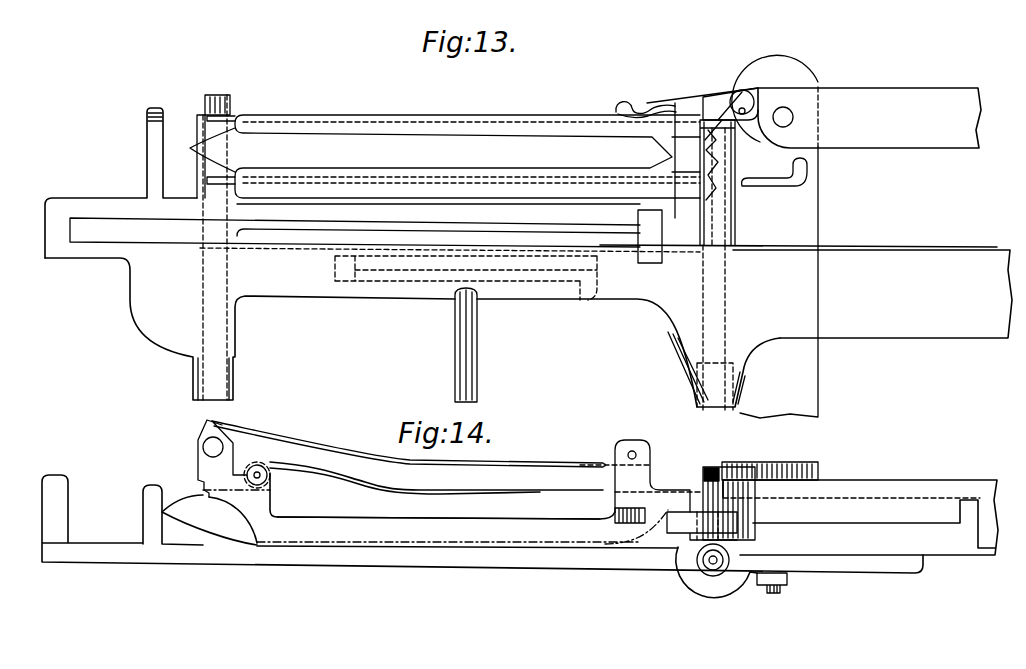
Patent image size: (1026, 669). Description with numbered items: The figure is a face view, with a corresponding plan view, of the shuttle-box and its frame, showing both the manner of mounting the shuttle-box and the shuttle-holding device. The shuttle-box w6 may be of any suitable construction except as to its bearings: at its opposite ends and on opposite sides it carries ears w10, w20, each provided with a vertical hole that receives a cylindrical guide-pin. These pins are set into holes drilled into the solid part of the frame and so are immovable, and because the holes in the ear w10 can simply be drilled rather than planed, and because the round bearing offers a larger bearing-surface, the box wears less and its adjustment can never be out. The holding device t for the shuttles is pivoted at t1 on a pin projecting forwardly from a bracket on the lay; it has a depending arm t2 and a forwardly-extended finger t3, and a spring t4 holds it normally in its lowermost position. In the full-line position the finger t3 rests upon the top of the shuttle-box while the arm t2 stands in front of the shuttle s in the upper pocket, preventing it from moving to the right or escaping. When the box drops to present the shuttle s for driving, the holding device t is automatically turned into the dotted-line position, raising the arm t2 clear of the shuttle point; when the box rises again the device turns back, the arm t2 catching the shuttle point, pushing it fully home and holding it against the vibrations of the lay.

In FIG. 13, the shuttle s is at (445, 156).
In FIG. 13, the ear w20 is at (733, 127).
In FIG. 14, the ear w20 is at (708, 577).
In FIG. 14, the ear w10 is at (193, 460).
In FIG. 14, the shuttle-box w6 is at (435, 530).
In FIG. 13, the holding device t is at (685, 102).
In FIG. 14, the holding device t is at (681, 512).
In FIG. 13, the pivot t1 is at (718, 120).
In FIG. 14, the pivot t1 is at (748, 527).
In FIG. 13, the depending arm t2 is at (675, 180).
In FIG. 13, the forwardly-extended finger t3 is at (632, 102).
In FIG. 14, the forwardly-extended finger t3 is at (633, 512).
In FIG. 13, the spring t4 is at (728, 160).